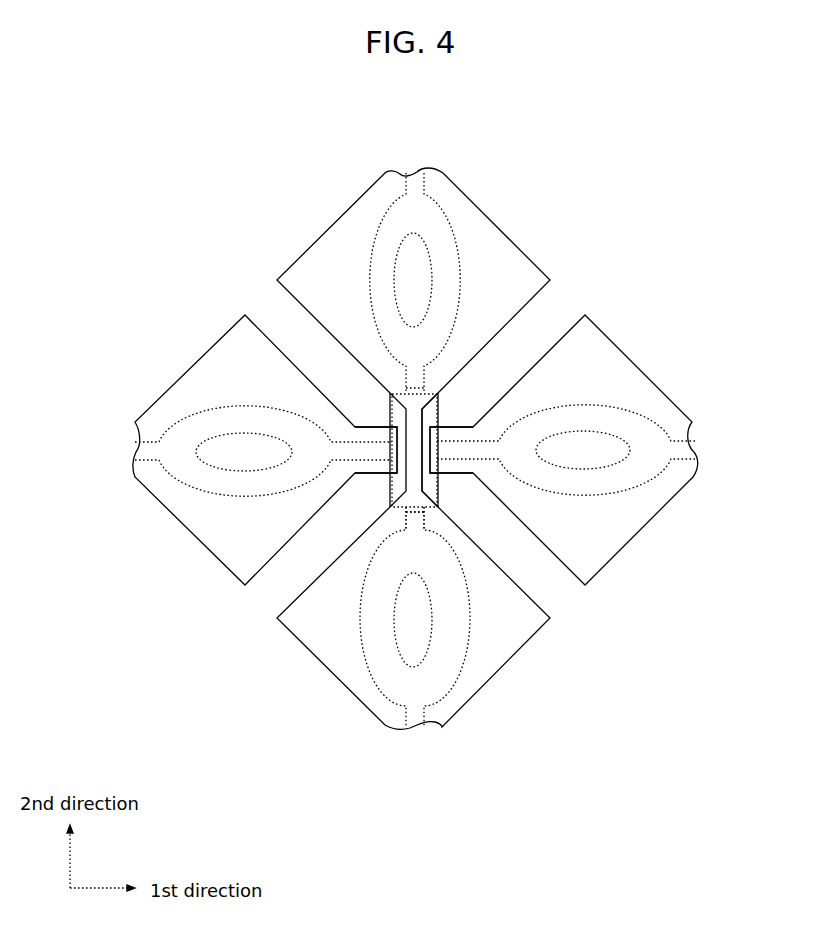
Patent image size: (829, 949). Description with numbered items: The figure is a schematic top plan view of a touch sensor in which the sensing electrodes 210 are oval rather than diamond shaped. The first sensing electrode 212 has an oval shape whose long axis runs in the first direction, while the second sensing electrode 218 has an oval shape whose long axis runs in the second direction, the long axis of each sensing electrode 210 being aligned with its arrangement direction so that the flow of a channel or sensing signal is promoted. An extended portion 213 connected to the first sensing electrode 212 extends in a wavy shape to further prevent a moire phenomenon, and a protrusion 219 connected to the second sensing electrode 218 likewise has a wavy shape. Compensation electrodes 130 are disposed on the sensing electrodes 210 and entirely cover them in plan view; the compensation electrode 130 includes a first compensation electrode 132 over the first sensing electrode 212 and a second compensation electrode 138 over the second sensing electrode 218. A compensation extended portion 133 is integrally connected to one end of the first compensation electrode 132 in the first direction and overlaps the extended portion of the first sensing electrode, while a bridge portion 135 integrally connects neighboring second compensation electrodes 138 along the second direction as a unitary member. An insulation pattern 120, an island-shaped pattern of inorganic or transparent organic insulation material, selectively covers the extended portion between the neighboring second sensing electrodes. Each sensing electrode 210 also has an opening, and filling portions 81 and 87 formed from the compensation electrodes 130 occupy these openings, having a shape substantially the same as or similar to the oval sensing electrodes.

The filling portion 81 is at (230, 443).
The filling portion 87 is at (413, 245).
The insulation pattern 120 is at (392, 488).
The compensation electrode 130 is at (294, 522).
The first compensation electrode 132 is at (185, 515).
The second compensation electrode 138 is at (353, 687).
The compensation extended portion 133 is at (452, 415).
The bridge portion 135 is at (440, 497).
The sensing electrode 210 is at (581, 566).
The first sensing electrode 212 is at (627, 480).
The second sensing electrode 218 is at (452, 633).
The extended portion 213 is at (383, 433).
The protrusion 219 is at (445, 523).